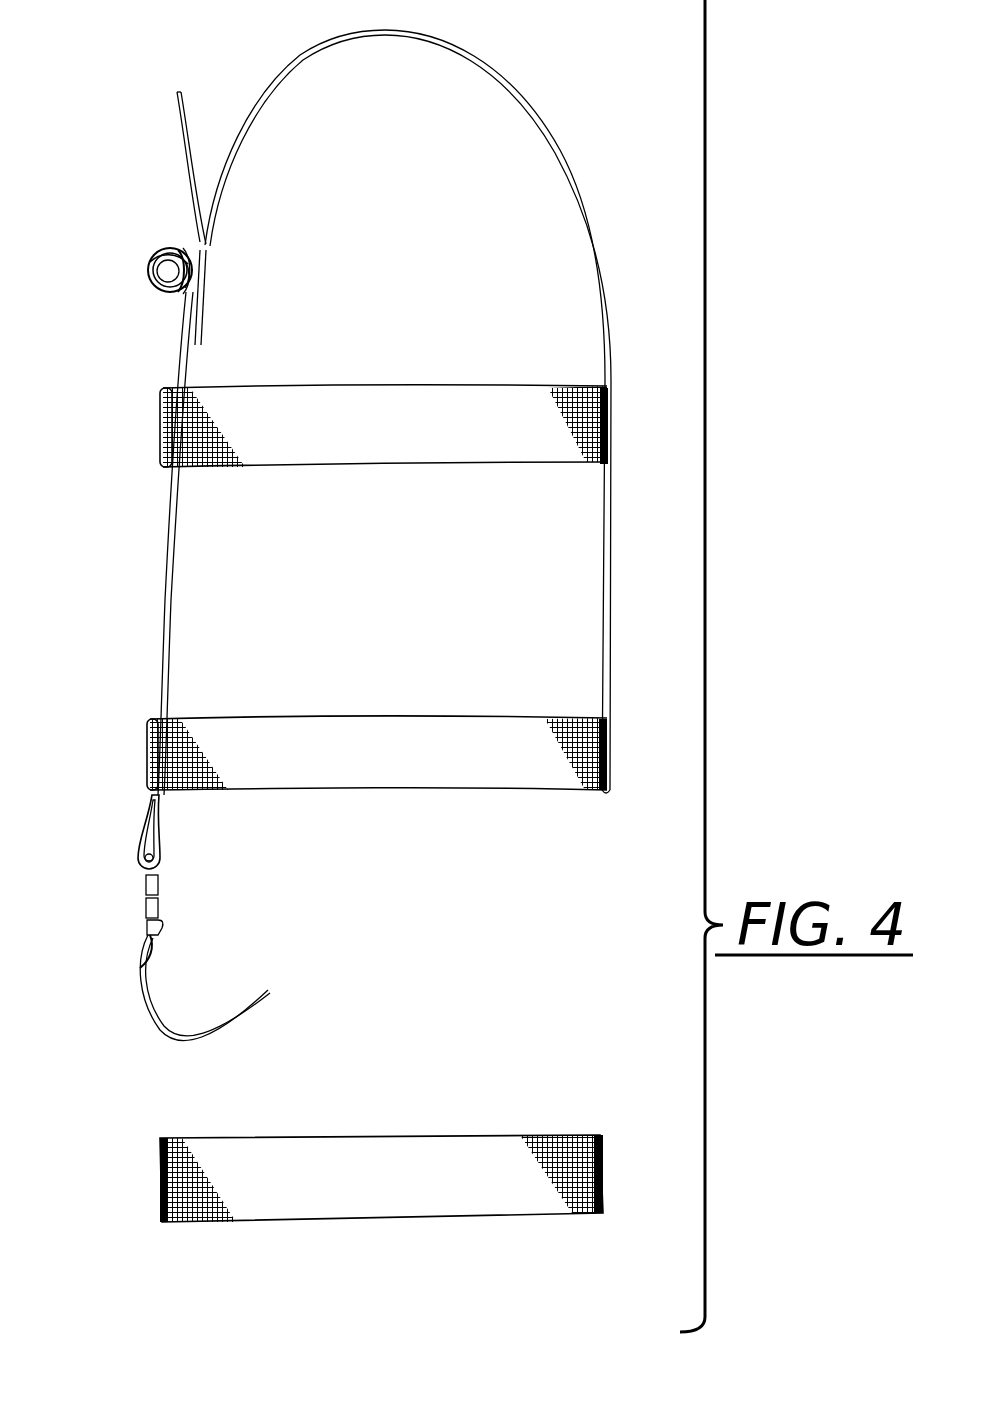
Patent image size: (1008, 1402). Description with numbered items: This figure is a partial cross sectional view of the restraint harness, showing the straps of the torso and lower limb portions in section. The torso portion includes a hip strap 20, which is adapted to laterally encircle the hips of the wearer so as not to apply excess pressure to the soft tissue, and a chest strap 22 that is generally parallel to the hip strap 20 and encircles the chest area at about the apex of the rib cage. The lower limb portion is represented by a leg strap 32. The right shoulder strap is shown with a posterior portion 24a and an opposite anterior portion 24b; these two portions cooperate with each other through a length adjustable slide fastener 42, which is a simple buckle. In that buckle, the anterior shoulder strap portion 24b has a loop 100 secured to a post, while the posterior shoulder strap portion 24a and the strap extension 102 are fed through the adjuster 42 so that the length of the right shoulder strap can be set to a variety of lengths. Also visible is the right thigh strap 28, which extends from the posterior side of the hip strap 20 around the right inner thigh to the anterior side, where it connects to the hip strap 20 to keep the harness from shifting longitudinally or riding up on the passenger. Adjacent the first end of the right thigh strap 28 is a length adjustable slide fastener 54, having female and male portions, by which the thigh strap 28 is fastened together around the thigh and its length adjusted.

The hip strap 20 is at (466, 790).
The chest strap 22 is at (408, 467).
The posterior portion of right shoulder strap 24a is at (568, 172).
The anterior portion of right shoulder strap 24b is at (175, 355).
The right thigh strap 28 is at (248, 1015).
The leg strap 32 is at (605, 1175).
The length adjustable slide fastener 42 is at (143, 273).
The length adjustable slide fastener 54 is at (125, 896).
The loop 100 is at (200, 262).
The strap extension 102 is at (190, 148).